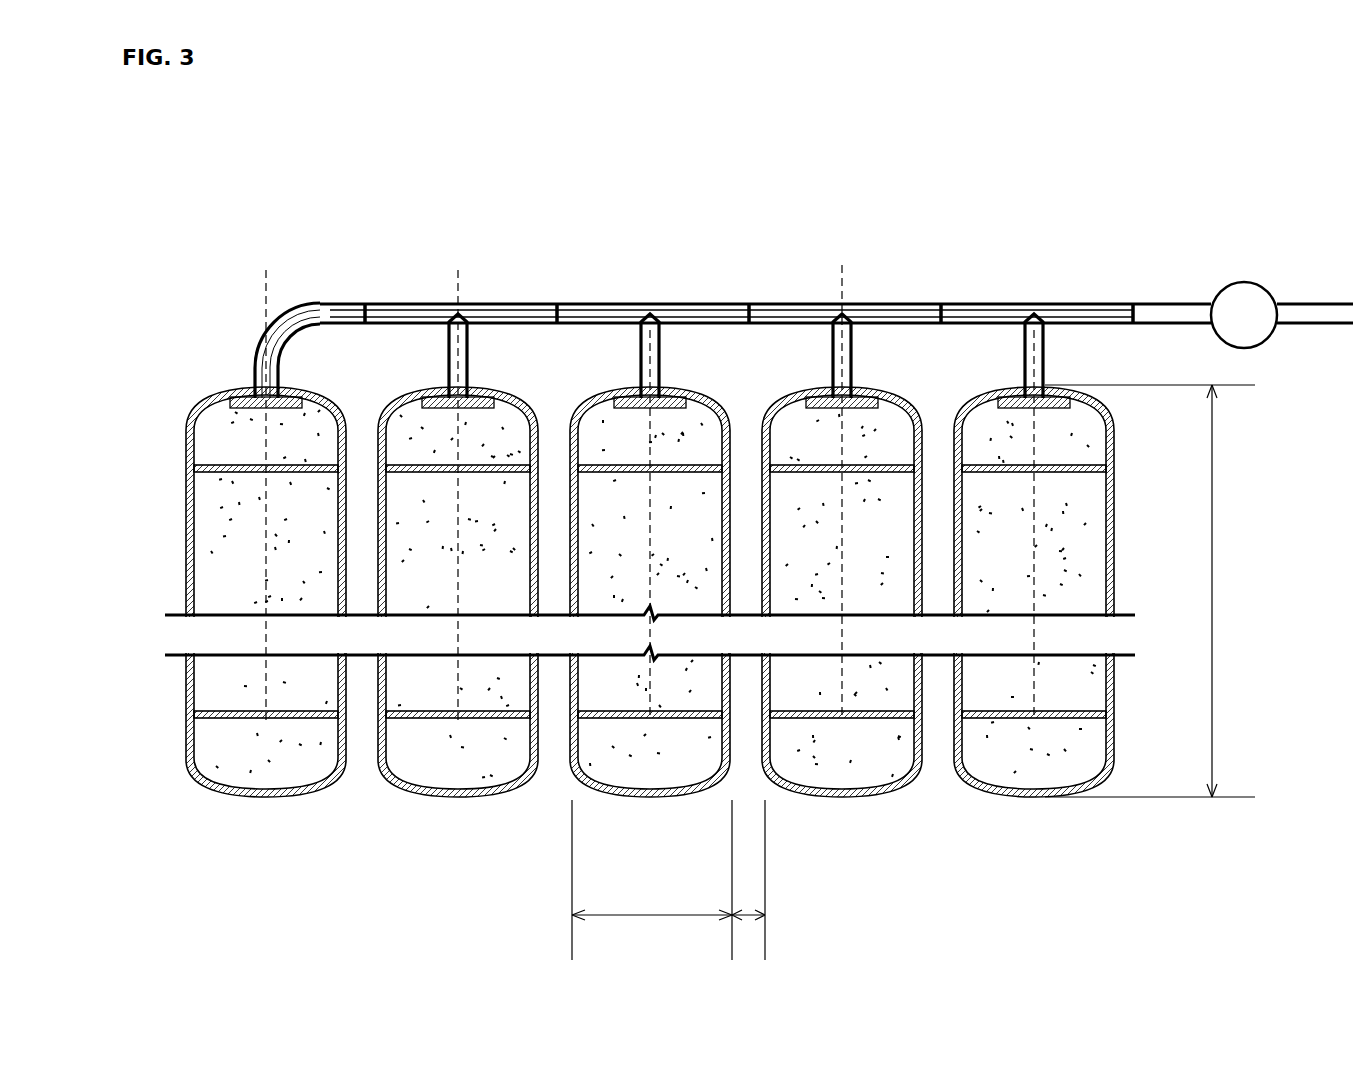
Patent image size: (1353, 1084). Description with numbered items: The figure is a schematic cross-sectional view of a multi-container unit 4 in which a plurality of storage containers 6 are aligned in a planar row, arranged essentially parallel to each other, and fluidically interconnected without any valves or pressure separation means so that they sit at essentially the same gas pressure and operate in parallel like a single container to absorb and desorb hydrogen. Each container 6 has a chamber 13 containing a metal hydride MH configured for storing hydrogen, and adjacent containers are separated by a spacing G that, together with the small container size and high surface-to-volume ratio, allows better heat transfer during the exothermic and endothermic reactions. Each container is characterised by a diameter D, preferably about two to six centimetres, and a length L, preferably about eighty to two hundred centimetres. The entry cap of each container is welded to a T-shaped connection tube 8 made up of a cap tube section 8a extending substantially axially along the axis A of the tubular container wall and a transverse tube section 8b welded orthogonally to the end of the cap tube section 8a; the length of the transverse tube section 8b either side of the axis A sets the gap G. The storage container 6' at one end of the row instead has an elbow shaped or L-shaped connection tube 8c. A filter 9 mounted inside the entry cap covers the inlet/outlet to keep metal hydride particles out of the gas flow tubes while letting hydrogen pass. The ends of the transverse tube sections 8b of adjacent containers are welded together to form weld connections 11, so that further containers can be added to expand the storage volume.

The multi-container unit 4 is at (888, 82).
The storage container 6 is at (752, 642).
The storage container at one end of the row 6' is at (266, 640).
The T-shaped connection tube 8 is at (511, 280).
The cap tube section 8a is at (447, 352).
The transverse tube section 8b is at (425, 302).
The elbow shaped or L-shaped connection tube 8c is at (282, 302).
The filter 9 is at (247, 412).
The weld connection 11 is at (365, 300).
The chamber 13 is at (197, 522).
The metal hydride MH is at (222, 585).
The axis A is at (854, 274).
The length L is at (1150, 591).
The diameter D is at (652, 880).
The spacing G is at (748, 880).